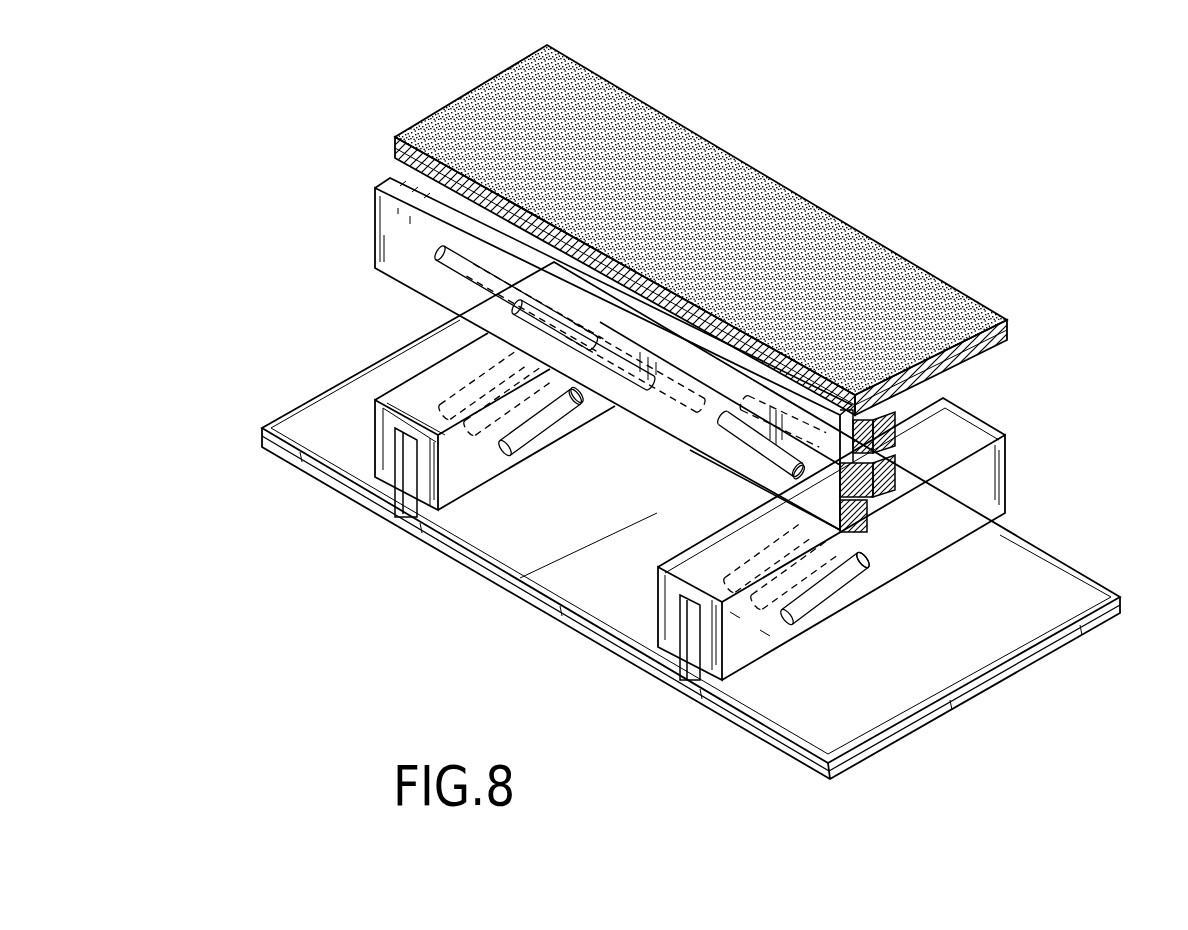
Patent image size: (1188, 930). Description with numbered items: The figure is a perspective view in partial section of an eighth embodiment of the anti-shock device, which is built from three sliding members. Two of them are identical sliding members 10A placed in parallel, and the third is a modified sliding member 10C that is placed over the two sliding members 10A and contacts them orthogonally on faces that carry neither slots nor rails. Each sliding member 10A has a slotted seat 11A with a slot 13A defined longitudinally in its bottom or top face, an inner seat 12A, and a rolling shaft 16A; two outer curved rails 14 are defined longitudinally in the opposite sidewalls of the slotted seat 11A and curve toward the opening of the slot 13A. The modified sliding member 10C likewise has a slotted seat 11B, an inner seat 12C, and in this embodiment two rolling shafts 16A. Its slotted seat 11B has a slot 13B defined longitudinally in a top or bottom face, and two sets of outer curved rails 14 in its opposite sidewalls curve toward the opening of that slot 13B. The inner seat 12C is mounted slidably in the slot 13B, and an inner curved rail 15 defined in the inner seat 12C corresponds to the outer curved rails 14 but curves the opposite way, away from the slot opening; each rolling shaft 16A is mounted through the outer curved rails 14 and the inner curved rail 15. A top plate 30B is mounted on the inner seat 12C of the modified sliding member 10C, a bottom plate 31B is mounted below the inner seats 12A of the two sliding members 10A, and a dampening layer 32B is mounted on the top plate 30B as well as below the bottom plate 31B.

The sliding member 10A is at (661, 555).
The modified sliding member 10C is at (544, 336).
The slotted seat 11A is at (446, 458).
The slotted seat 11B is at (397, 248).
The inner seat 12A is at (688, 657).
The inner seat 12C is at (412, 175).
The slot 13A is at (405, 472).
The slot 13B is at (853, 480).
The outer curved rails 14 is at (437, 262).
The inner curved rail 15 is at (824, 432).
The rolling shaft 16A is at (578, 400).
The top plate 30B is at (987, 352).
The bottom plate 31B is at (1055, 583).
The dampening layer 32B is at (942, 297).